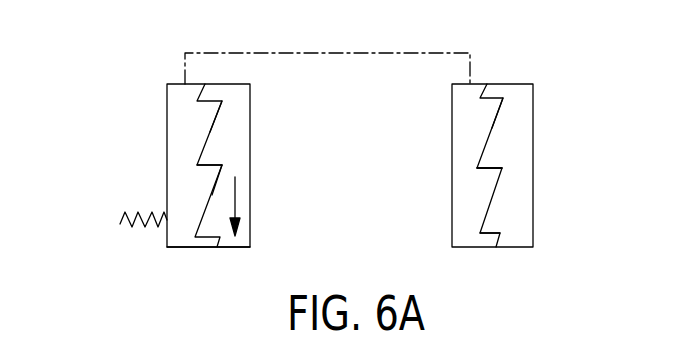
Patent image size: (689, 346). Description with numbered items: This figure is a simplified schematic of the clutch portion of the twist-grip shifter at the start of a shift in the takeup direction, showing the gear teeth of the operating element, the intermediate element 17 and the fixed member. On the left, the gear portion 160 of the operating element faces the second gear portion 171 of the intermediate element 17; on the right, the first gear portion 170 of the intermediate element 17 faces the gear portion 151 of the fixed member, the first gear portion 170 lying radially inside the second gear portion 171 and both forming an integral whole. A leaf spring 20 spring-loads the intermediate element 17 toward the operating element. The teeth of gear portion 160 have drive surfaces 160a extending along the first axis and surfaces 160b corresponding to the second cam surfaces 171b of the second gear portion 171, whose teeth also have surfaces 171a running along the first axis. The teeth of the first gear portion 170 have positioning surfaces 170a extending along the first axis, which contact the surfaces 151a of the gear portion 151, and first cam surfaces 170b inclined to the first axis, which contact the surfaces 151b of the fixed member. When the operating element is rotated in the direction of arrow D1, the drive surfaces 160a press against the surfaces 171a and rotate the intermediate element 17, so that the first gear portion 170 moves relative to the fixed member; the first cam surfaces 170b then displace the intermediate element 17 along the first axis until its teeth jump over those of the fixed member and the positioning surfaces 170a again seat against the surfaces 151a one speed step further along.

The intermediate element 17 is at (351, 54).
The leaf spring 20 is at (120, 224).
The gear portion of the operating element 160 is at (238, 84).
The drive surfaces 160a is at (204, 238).
The surfaces corresponding to the second cam surfaces 160b is at (214, 178).
The second gear portion of the intermediate element 171 is at (172, 84).
The surfaces extending along the first axis 171a is at (200, 164).
The second cam surfaces 171b is at (212, 125).
The gear portion of the fixed member 151 is at (512, 84).
The surfaces of the fixed member gear portion 151a is at (480, 170).
The surfaces of the fixed member 151b is at (488, 212).
The first gear portion of the intermediate element 170 is at (462, 84).
The positioning surfaces 170a is at (497, 165).
The first cam surfaces 170b is at (491, 128).
The arrow indicating takeup rotation direction D1 is at (240, 203).